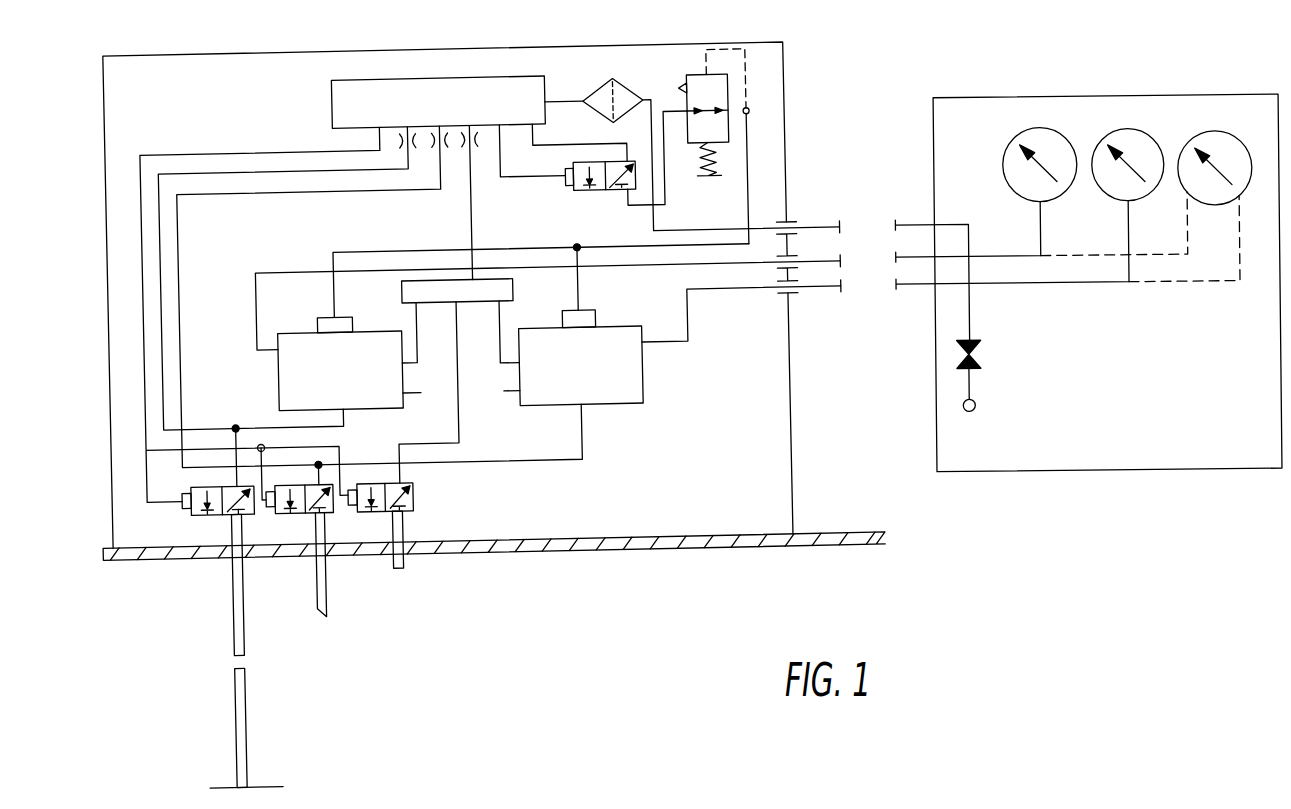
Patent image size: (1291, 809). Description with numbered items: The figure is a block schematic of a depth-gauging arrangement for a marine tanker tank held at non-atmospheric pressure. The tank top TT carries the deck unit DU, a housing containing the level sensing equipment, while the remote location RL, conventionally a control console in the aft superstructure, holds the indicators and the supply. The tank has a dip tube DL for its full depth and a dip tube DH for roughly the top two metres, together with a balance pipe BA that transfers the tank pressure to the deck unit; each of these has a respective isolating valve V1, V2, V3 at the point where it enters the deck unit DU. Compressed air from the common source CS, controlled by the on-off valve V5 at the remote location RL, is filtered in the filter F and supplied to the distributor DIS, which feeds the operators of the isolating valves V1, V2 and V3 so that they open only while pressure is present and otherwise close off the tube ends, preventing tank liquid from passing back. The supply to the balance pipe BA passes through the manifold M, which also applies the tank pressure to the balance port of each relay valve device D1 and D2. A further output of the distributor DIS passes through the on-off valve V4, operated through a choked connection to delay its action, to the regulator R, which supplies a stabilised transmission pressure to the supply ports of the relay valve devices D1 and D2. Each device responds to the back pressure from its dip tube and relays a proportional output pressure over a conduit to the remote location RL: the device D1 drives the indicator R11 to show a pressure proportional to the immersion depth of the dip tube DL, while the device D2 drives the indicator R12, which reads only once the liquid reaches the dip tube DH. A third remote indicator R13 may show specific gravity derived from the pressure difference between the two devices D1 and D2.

The distributor DIS is at (438, 112).
The filter F is at (612, 89).
The regulator R is at (714, 112).
The on-off valve V4 is at (600, 193).
The manifold M is at (457, 291).
The relay valve device D1 is at (322, 363).
The relay valve device D2 is at (605, 357).
The isolating valve V1 is at (202, 515).
The isolating valve V2 is at (300, 515).
The isolating valve V3 is at (399, 513).
The deck unit DU is at (784, 492).
The tank top TT is at (494, 565).
The balance pipe BA is at (406, 557).
The dip tube DH is at (319, 582).
The dip tube DL is at (250, 650).
The indicator R11 is at (1027, 155).
The indicator R12 is at (1116, 152).
The remote indicator R13 is at (1219, 153).
The on-off valve V5 is at (988, 368).
The common source CS is at (968, 422).
The remote location RL is at (1251, 470).